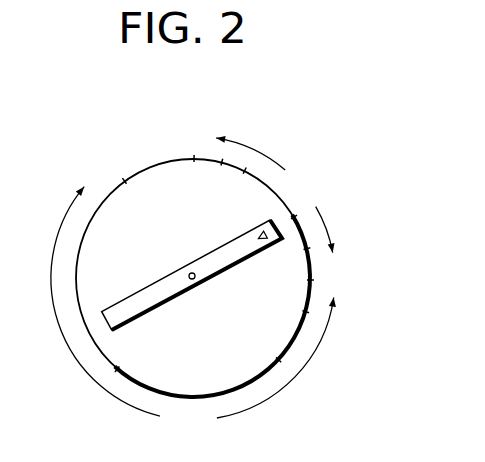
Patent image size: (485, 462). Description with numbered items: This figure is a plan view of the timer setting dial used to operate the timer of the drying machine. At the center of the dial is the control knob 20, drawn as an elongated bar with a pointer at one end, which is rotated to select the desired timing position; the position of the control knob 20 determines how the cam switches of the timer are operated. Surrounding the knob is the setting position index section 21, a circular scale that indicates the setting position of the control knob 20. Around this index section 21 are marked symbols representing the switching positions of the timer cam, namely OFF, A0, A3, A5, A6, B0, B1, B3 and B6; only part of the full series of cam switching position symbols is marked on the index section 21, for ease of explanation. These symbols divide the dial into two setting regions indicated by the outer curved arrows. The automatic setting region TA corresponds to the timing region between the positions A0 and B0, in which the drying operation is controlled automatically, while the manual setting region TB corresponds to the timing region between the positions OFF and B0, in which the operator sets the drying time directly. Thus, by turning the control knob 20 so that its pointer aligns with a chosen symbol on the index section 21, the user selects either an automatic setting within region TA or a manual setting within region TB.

The control knob 20 is at (212, 252).
The setting position index section 21 is at (91, 335).
The OFF position OFF is at (119, 169).
The switching position A0 is at (202, 170).
The switching position A3 is at (240, 184).
The switching position A5 is at (277, 215).
The switching position A6 is at (292, 258).
The switching position B0 is at (327, 278).
The switching position B1 is at (291, 303).
The switching position B3 is at (267, 346).
The switching position B6 is at (132, 358).
The automatic setting region TA is at (275, 194).
The manual setting region TB is at (193, 309).